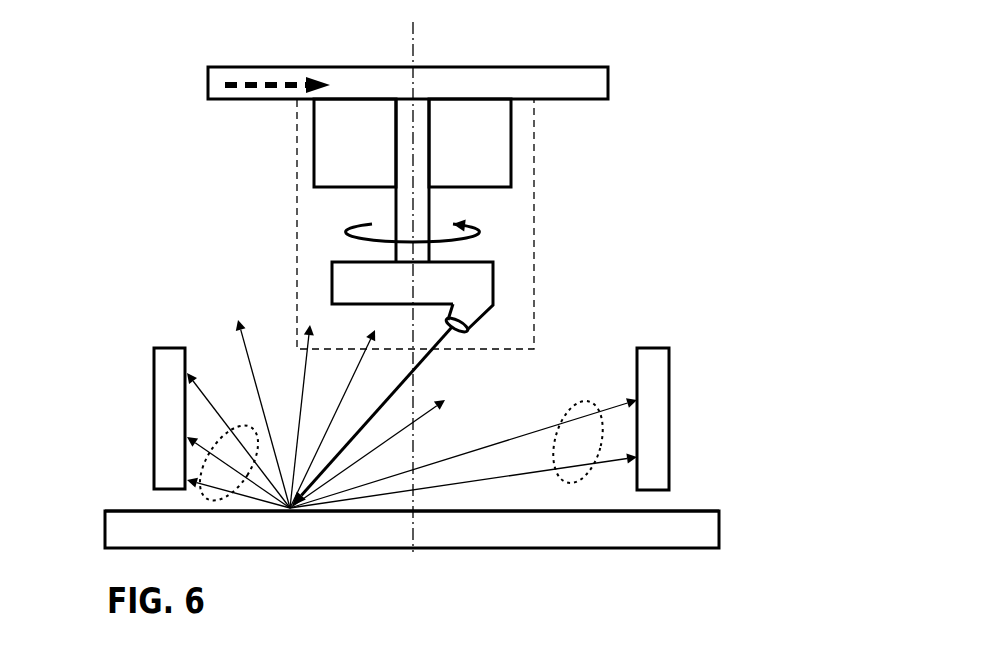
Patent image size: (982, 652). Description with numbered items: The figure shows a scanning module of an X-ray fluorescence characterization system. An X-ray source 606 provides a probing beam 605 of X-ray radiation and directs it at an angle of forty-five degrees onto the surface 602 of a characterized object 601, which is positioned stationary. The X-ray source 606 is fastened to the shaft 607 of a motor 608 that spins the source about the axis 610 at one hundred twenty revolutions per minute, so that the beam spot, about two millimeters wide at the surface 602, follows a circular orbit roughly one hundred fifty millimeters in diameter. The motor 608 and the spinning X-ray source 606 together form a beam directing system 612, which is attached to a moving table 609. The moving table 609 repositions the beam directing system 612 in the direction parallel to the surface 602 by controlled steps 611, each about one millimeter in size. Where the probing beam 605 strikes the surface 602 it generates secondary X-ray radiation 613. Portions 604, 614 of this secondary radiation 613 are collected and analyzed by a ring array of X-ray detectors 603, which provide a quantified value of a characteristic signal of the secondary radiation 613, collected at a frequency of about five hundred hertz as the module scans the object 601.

The characterized object 601 is at (702, 530).
The surface 602 is at (683, 511).
The ring array of X-ray detectors 603 is at (154, 420).
The portion of the secondary radiation 604 is at (568, 398).
The probing beam 605 is at (450, 398).
The X-ray source 606 is at (493, 283).
The shaft 607 is at (429, 205).
The motor 608 is at (511, 143).
The moving table 609 is at (573, 82).
The axis 610 is at (412, 48).
The controlled steps 611 is at (245, 77).
The beam directing system 612 is at (297, 225).
The secondary X-ray radiation 613 is at (277, 392).
The portion of the secondary radiation 614 is at (246, 458).